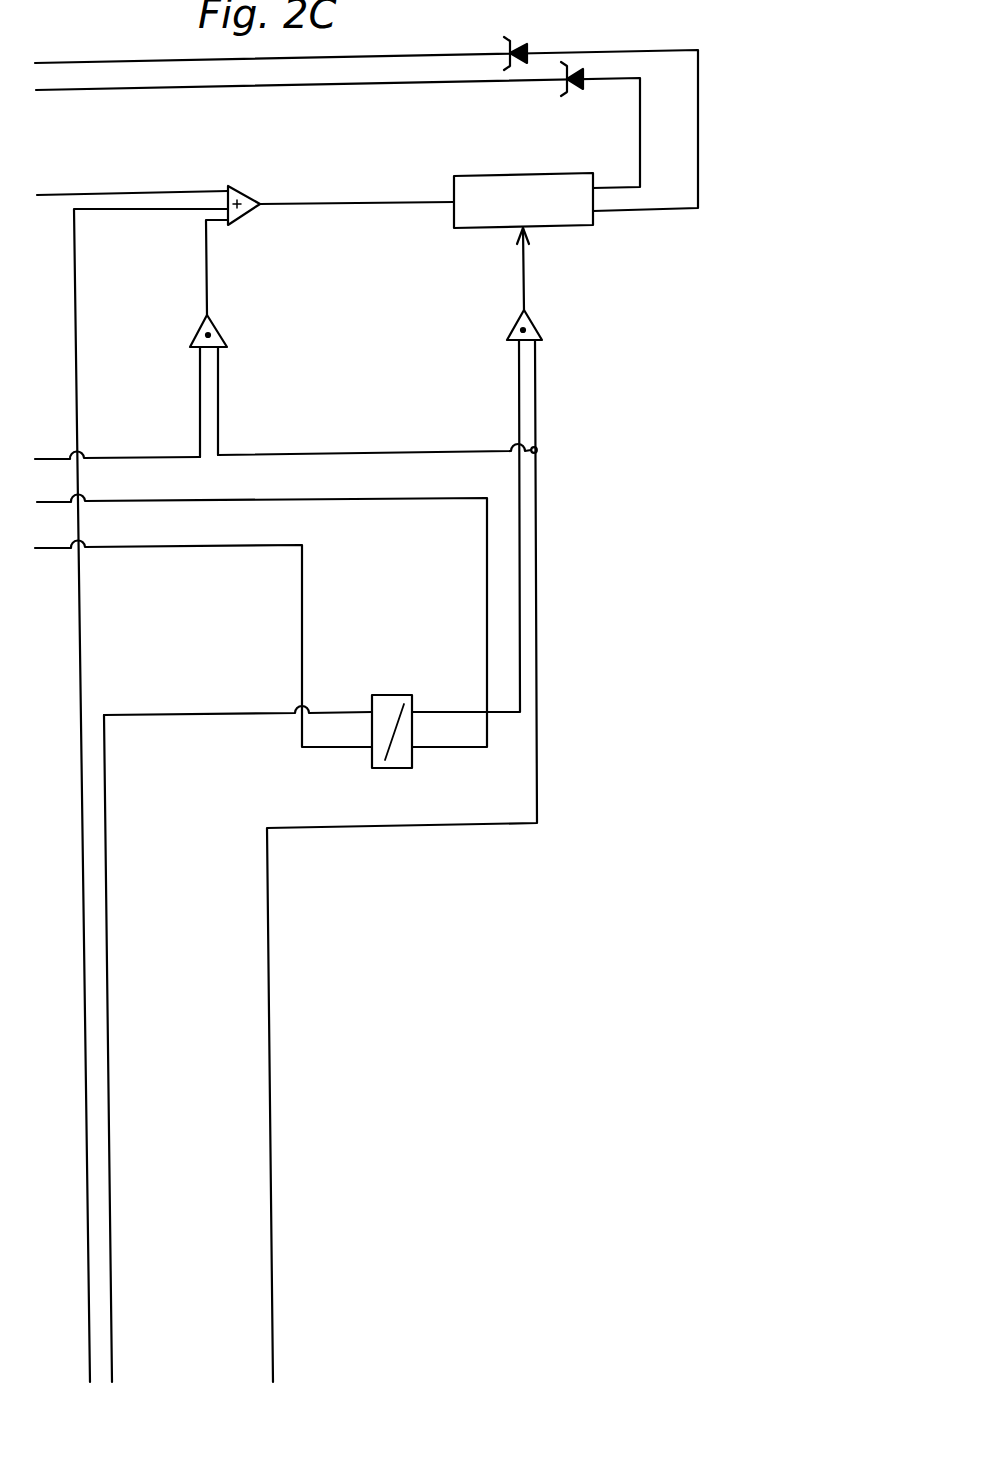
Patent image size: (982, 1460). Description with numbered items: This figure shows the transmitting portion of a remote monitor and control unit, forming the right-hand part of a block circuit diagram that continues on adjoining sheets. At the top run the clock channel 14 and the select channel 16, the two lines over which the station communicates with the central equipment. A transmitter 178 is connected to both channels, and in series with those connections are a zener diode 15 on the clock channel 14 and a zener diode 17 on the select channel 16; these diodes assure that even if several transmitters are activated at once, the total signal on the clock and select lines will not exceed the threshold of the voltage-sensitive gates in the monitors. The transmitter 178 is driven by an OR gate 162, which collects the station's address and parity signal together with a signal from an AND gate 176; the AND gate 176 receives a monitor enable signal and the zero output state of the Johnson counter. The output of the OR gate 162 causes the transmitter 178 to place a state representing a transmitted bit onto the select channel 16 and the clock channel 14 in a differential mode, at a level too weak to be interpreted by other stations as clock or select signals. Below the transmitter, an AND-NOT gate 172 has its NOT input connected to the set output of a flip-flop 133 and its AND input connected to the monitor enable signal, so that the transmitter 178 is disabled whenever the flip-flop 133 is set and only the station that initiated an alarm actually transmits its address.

The clock channel 14 is at (698, 118).
The zener diode 15 is at (528, 50).
The select channel 16 is at (640, 150).
The zener diode 17 is at (584, 86).
The flip-flop 133 is at (392, 694).
The OR gate 162 is at (248, 190).
The AND-NOT gate 172 is at (545, 328).
The AND gate 176 is at (228, 332).
The transmitter 178 is at (538, 172).